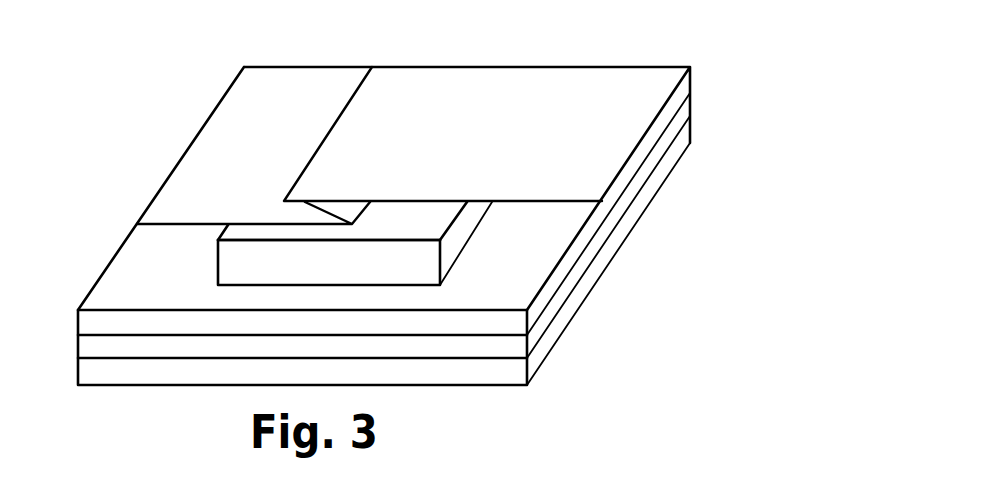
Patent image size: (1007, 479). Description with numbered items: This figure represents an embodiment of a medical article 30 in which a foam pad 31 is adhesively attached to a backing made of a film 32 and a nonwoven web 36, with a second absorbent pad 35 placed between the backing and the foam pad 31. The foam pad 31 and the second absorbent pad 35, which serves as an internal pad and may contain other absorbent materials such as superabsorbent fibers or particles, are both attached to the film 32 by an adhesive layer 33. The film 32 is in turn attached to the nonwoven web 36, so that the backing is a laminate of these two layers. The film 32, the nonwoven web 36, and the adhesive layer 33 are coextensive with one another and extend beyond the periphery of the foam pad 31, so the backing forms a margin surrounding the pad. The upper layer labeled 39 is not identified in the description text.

The medical article 30 is at (655, 42).
The upper cover plate 39 is at (633, 97).
The foam pad 31 is at (410, 247).
The second absorbent pad 35 is at (400, 275).
The adhesive layer 33 is at (100, 320).
The film 32 is at (97, 347).
The nonwoven web 36 is at (92, 373).